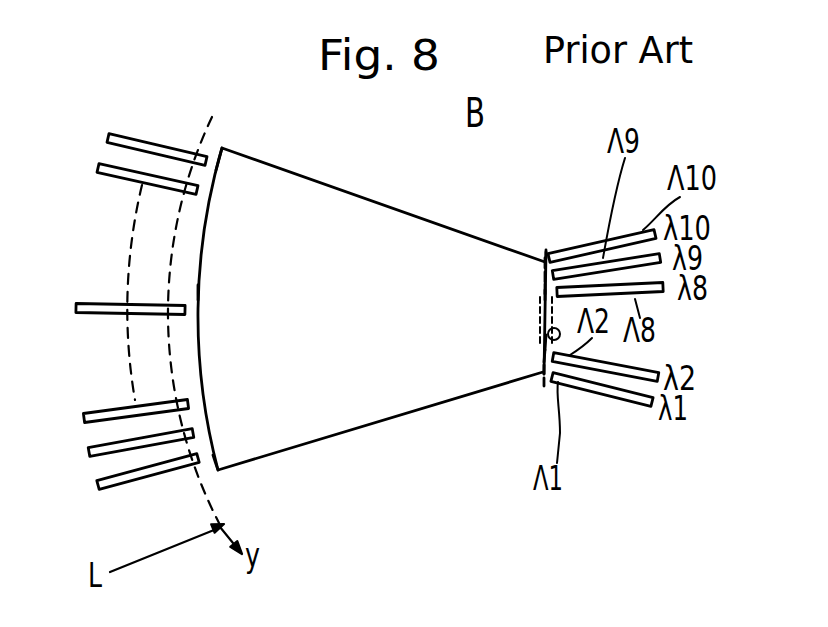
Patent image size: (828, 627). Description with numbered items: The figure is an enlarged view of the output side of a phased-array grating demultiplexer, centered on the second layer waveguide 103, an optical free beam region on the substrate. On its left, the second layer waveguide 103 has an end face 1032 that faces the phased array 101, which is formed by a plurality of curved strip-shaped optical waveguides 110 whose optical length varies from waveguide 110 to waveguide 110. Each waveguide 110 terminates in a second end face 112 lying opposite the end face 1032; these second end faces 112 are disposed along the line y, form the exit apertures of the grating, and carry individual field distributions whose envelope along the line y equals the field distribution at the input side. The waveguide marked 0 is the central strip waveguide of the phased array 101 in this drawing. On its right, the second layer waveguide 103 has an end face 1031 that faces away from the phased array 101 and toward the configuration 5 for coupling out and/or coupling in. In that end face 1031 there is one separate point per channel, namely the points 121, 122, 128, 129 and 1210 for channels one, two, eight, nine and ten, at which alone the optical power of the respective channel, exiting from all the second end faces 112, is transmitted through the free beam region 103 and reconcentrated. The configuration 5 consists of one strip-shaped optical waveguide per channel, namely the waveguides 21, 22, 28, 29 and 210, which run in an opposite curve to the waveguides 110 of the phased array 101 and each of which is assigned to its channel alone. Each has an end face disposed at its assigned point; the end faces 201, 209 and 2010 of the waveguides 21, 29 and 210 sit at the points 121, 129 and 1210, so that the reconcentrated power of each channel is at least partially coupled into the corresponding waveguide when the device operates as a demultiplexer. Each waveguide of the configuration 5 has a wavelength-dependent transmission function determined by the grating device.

The second layer waveguide 103 is at (342, 436).
The end face of second layer waveguide facing away from phased array 1031 is at (540, 341).
The end face of second layer waveguide facing phased array 1032 is at (193, 292).
The second end face 112 is at (222, 168).
The phased array 101 is at (197, 125).
The strip-shaped optical waveguide 110 is at (118, 137).
The central input waveguide 0 is at (185, 308).
The point for channel lambda 10 1210 is at (541, 263).
The point for channel lambda 9 129 is at (547, 277).
The point for channel lambda 8 128 is at (544, 288).
The point for channel lambda 2 122 is at (540, 355).
The point for channel lambda 1 121 is at (537, 371).
The end face of waveguide for channel lambda 10 2010 is at (543, 254).
The end face of waveguide for channel lambda 9 209 is at (543, 289).
The end face of waveguide for channel lambda 1 201 is at (543, 383).
The strip-shaped optical waveguide for channel lambda 10 210 is at (585, 244).
The strip-shaped optical waveguide for channel lambda 9 29 is at (633, 231).
The strip-shaped optical waveguide for channel lambda 8 28 is at (647, 297).
The strip-shaped optical waveguide for channel lambda 2 22 is at (580, 362).
The strip-shaped optical waveguide for channel lambda 1 21 is at (610, 397).
The configuration for coupling out and/or coupling in 5 is at (606, 435).